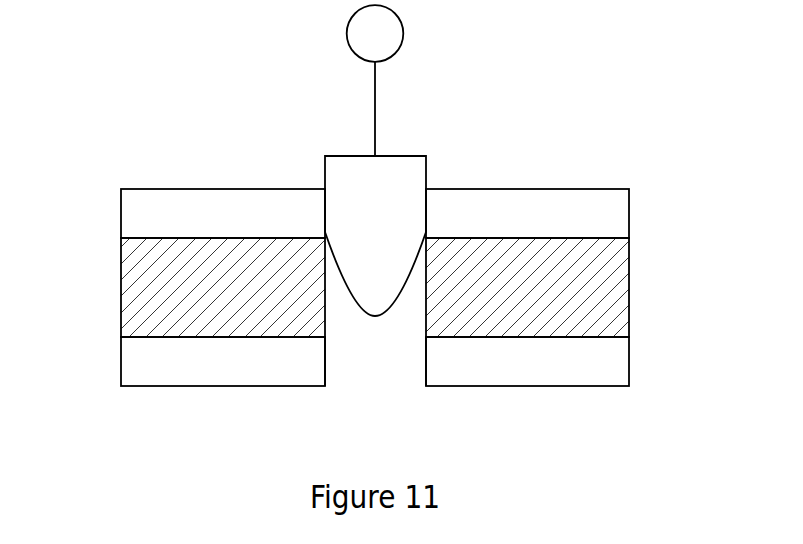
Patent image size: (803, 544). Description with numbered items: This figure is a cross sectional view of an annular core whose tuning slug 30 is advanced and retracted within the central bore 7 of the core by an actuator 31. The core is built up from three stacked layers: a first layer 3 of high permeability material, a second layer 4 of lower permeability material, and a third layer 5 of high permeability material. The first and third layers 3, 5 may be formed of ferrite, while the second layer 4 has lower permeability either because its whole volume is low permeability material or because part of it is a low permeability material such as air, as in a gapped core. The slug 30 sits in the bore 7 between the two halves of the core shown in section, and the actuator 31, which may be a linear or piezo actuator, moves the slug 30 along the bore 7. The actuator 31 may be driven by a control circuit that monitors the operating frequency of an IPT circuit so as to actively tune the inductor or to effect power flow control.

The actuator 31 is at (403, 28).
The slug 30 is at (403, 188).
The third layer 5 is at (150, 215).
The second layer 4 is at (152, 298).
The first layer 3 is at (150, 370).
The bore 7 is at (425, 358).